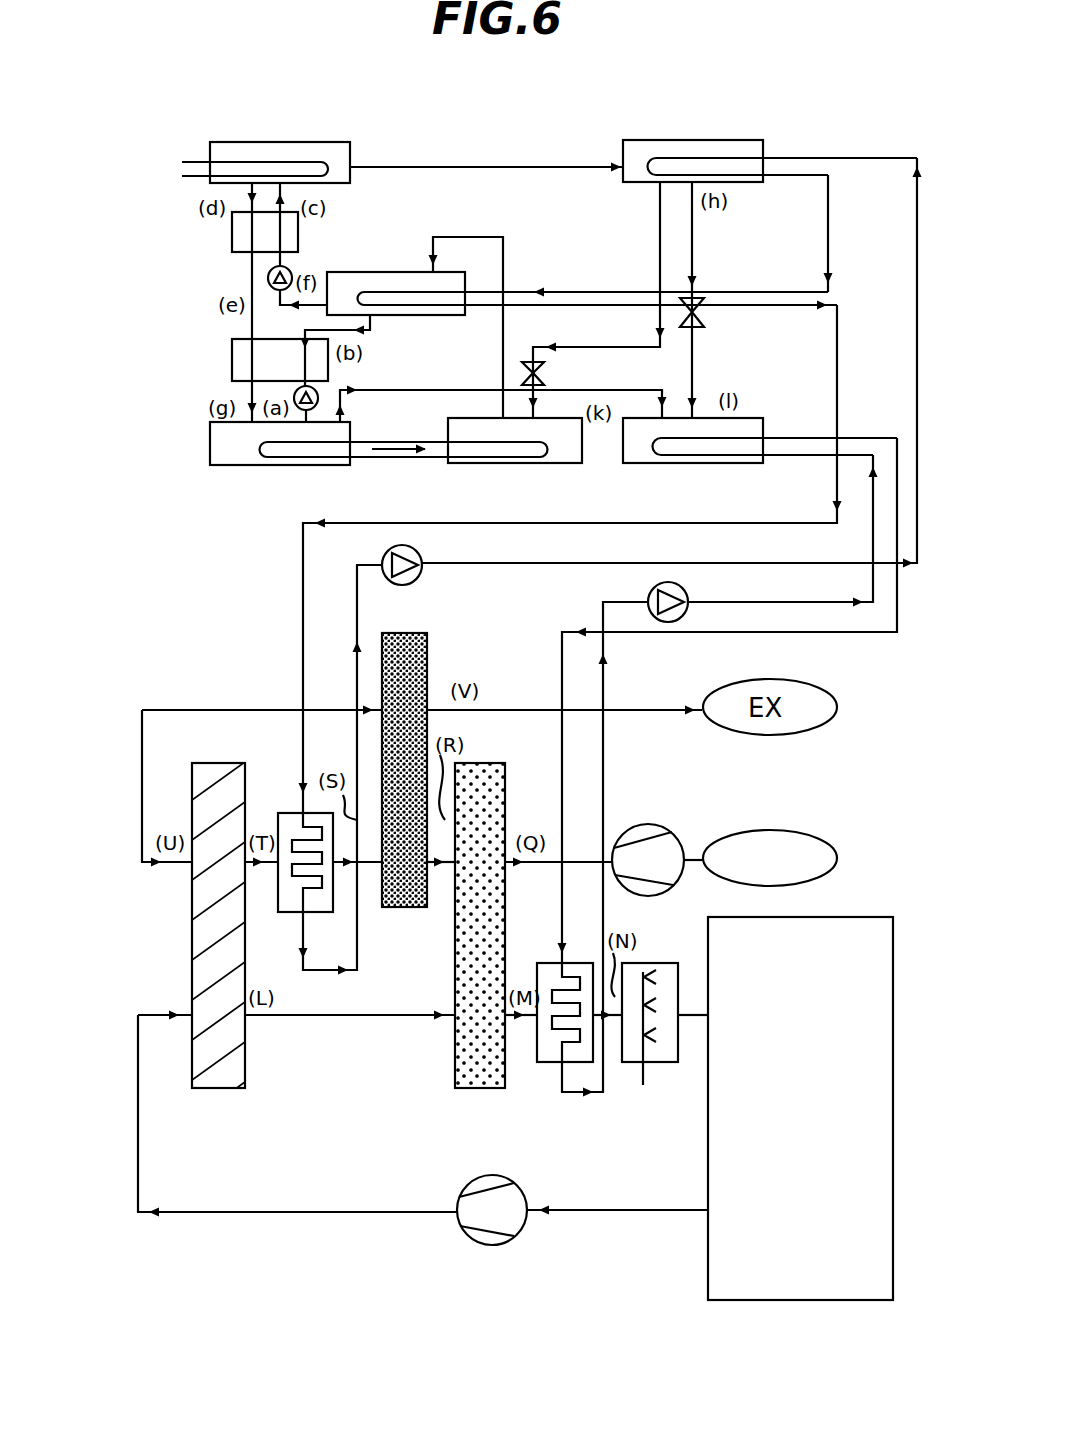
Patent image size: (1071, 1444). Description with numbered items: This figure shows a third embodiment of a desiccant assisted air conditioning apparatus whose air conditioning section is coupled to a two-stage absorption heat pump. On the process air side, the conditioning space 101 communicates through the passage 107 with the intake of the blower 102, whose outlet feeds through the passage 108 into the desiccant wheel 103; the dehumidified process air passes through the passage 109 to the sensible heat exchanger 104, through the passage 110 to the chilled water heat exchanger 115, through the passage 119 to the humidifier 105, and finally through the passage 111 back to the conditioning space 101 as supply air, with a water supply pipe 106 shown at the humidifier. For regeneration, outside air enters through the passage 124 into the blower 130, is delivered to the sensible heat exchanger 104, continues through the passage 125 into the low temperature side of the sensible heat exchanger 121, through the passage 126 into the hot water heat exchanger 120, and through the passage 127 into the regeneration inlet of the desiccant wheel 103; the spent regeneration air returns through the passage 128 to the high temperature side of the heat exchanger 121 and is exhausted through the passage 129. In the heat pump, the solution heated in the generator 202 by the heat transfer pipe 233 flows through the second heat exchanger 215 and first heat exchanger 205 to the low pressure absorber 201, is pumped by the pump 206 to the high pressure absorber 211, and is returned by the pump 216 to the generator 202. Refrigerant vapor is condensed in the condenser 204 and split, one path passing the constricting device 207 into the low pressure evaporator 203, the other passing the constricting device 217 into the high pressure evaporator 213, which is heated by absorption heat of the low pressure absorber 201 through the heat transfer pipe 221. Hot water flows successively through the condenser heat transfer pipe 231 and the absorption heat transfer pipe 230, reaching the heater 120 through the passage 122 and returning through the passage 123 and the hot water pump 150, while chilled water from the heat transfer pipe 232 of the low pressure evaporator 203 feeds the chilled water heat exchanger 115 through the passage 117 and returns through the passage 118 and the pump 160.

The conditioning space 101 is at (845, 917).
The blower 102 is at (470, 1180).
The desiccant wheel 103 is at (192, 925).
The sensible heat exchanger 104 is at (455, 1030).
The humidifier 105 is at (648, 963).
The water supply pipe 106 is at (643, 1085).
The passage 107 is at (597, 1212).
The passage 108 is at (218, 1212).
The passage 109 is at (330, 1015).
The passage 110 is at (525, 1022).
The passage 111 is at (693, 1013).
The chilled water heat exchanger 115 is at (543, 957).
The passage 117 is at (562, 660).
The passage 118 is at (603, 675).
The passage 119 is at (608, 1017).
The hot water heat exchanger 120 is at (285, 813).
The sensible heat exchanger 121 is at (427, 645).
The passage 122 is at (303, 675).
The passage 123 is at (328, 970).
The passage 124 is at (700, 835).
The passage 125 is at (448, 867).
The passage 126 is at (363, 867).
The passage 127 is at (252, 865).
The passage 128 is at (142, 775).
The passage 129 is at (528, 710).
The blower 130 is at (645, 822).
The hot water pump 150 is at (420, 577).
The chilled water pump 160 is at (683, 585).
The low pressure absorber 201 is at (255, 465).
The generator 202 is at (248, 142).
The low pressure evaporator 203 is at (683, 463).
The condenser 204 is at (700, 140).
The first heat exchanger 205 is at (232, 365).
The pump 206 is at (312, 410).
The constricting device 207 is at (707, 318).
The high pressure absorber 211 is at (410, 272).
The high pressure evaporator 213 is at (485, 463).
The second heat exchanger 215 is at (232, 237).
The pump 216 is at (268, 278).
The constricting device 217 is at (546, 370).
The heat transfer pipe 221 is at (387, 458).
The heat transfer pipe 230 is at (460, 315).
The heat transfer pipe 231 is at (742, 180).
The heat transfer pipe 232 is at (790, 463).
The heat transfer pipe 233 is at (192, 162).